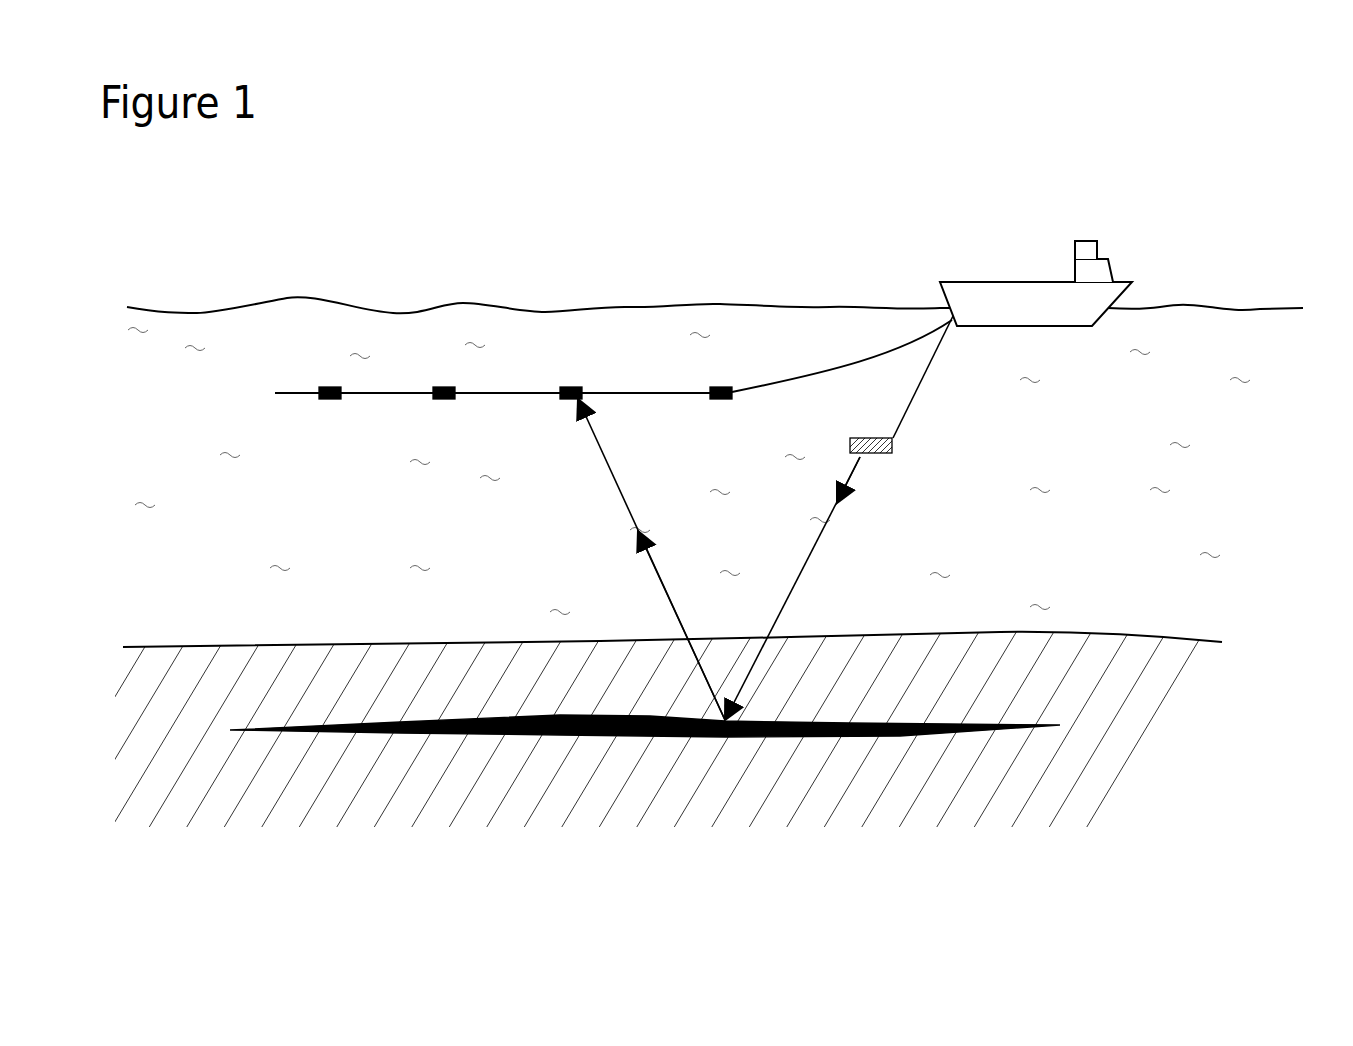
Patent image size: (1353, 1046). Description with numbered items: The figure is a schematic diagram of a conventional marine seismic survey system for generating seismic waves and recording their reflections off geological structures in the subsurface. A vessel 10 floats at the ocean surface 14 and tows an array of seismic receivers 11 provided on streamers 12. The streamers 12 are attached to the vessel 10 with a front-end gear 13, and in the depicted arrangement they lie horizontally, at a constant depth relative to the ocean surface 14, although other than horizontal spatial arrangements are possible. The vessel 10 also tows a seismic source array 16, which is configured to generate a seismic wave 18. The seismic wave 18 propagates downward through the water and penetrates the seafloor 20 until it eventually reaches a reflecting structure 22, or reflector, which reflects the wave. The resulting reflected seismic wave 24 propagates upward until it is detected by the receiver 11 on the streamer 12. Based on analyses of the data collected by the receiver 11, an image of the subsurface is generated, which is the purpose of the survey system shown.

The vessel 10 is at (1132, 222).
The seismic receivers 11 is at (330, 399).
The streamers 12 is at (645, 395).
The front-end gear 13 is at (877, 363).
The ocean surface 14 is at (292, 297).
The seismic source array 16 is at (885, 455).
The seismic wave 18 is at (812, 557).
The seafloor 20 is at (1075, 633).
The reflecting structure 22 is at (870, 723).
The reflected seismic wave 24 is at (606, 467).